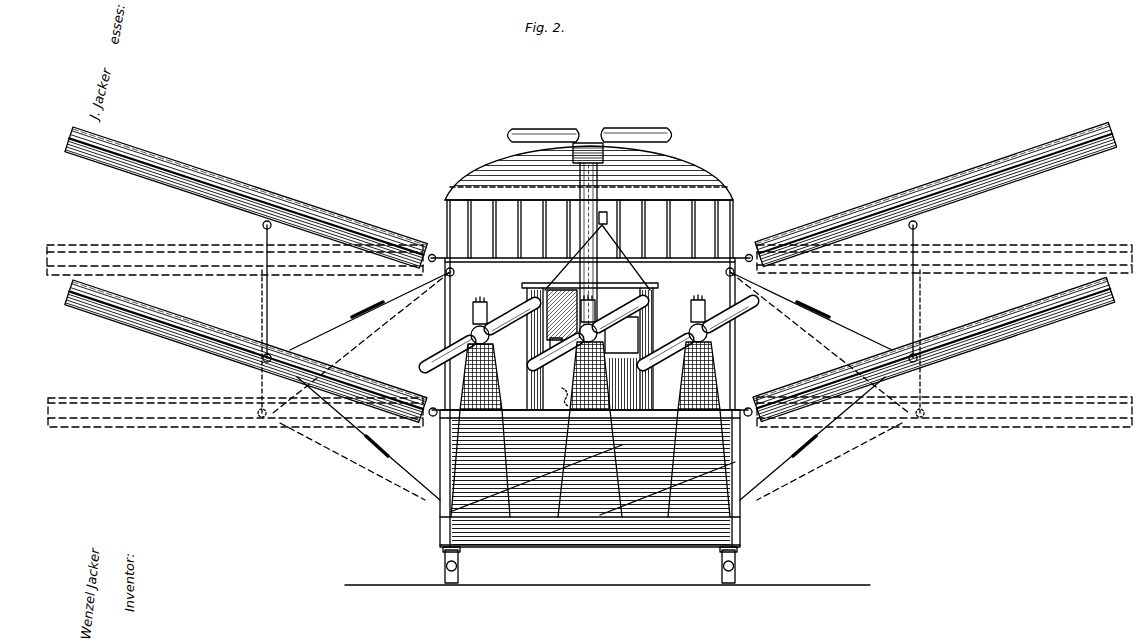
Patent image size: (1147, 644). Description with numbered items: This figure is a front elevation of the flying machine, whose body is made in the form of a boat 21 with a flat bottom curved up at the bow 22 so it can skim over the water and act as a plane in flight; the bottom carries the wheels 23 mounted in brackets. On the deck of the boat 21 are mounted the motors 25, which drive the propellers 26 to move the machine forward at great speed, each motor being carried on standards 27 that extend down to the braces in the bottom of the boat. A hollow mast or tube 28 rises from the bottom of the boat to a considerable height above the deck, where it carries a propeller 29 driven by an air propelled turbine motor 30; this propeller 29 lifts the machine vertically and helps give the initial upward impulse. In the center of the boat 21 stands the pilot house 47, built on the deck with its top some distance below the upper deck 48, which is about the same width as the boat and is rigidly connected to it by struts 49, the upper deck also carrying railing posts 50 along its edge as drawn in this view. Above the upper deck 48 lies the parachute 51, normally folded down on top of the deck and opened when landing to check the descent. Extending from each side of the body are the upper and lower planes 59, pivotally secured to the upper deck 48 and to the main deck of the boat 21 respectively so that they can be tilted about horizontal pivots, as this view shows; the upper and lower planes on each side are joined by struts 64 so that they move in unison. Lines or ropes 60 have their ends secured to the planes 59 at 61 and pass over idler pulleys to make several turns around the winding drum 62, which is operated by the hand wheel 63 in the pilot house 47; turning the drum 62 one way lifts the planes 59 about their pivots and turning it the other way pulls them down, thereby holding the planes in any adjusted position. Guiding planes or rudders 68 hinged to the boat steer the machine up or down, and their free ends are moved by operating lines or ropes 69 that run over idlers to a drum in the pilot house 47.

The boat 21 is at (440, 447).
The bow 22 is at (742, 459).
The wheels 23 is at (461, 583).
The motors 25 is at (474, 328).
The propellers 26 is at (425, 356).
The standards 27 is at (450, 466).
The hollow masts or tubes 28 is at (586, 189).
The propeller 29 is at (652, 133).
The air propelled turbine motor 30 is at (568, 133).
The pilot house 47 is at (648, 399).
The upper deck 48 is at (733, 245).
The struts 49 is at (445, 336).
The railing posts 50 is at (543, 226).
The parachute 51 is at (681, 164).
The upper and lower planes 59 is at (198, 192).
The lines or ropes 60 is at (826, 445).
The securing point 61 is at (269, 352).
The winding drum 62 is at (564, 395).
The hand wheel 63 is at (552, 344).
The struts 64 is at (268, 296).
The guiding planes or rudders 68 is at (527, 414).
The operating lines or ropes 69 is at (607, 213).